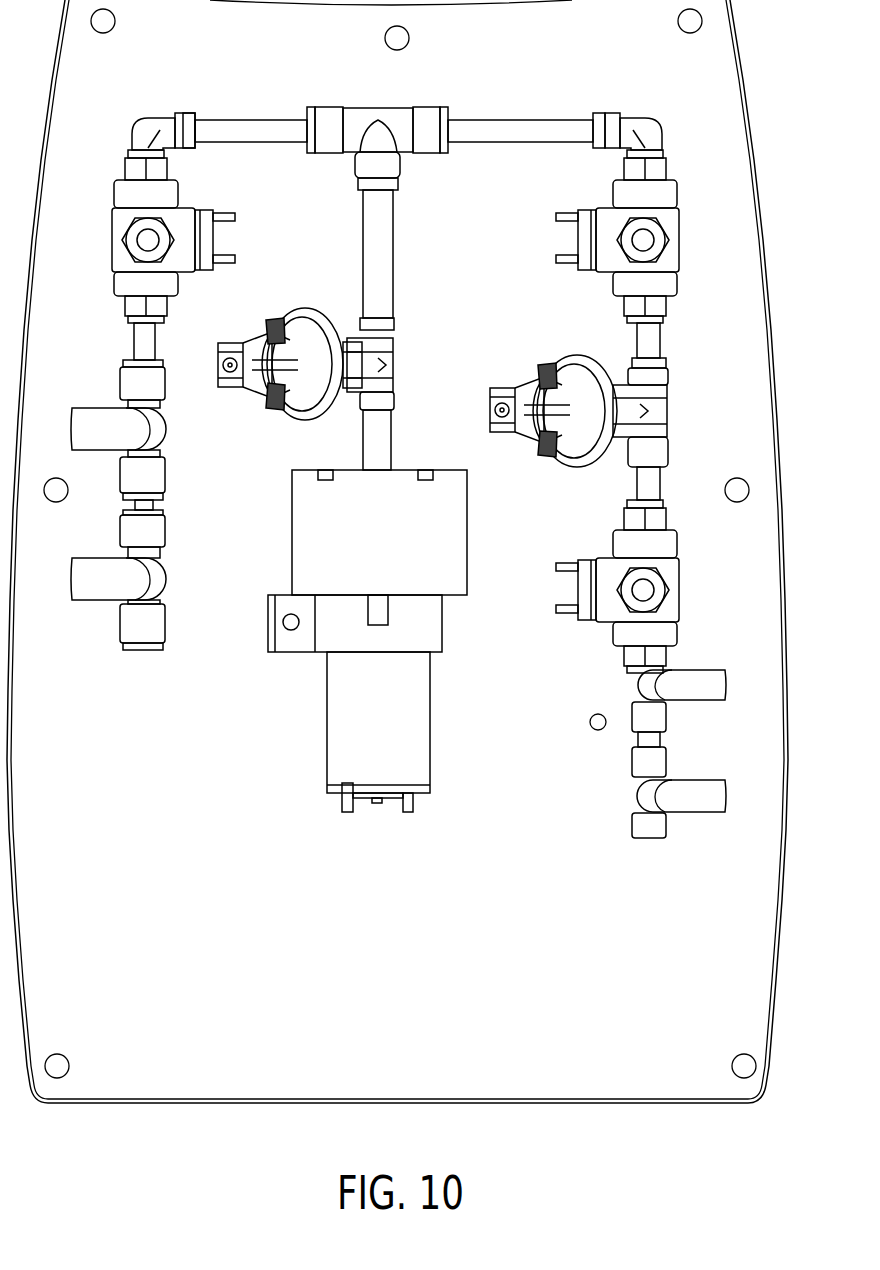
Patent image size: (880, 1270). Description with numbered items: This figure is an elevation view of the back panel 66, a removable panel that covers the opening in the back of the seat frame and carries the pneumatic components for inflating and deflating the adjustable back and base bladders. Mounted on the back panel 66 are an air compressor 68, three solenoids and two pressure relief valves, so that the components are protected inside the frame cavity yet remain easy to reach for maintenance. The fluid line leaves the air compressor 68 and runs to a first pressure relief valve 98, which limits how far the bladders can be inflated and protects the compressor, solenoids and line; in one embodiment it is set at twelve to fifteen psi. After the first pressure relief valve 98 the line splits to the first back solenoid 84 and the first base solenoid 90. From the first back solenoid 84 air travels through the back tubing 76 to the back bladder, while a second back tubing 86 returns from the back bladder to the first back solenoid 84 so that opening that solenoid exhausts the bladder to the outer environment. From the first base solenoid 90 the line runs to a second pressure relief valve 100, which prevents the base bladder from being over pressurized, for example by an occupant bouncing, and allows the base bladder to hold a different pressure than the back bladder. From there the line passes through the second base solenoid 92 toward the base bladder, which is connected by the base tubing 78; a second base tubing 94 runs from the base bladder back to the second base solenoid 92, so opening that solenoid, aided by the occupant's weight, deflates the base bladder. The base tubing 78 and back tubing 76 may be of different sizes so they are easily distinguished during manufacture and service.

The back panel 66 is at (207, 946).
The air compressor 68 is at (387, 548).
The back tubing 76 is at (100, 427).
The base tubing 78 is at (707, 685).
The first back solenoid 84 is at (125, 217).
The second back tubing 86 is at (95, 585).
The first base solenoid 90 is at (668, 262).
The second base solenoid 92 is at (672, 576).
The second base tubing 94 is at (707, 798).
The first pressure relief valve 98 is at (250, 393).
The second pressure relief valve 100 is at (637, 408).